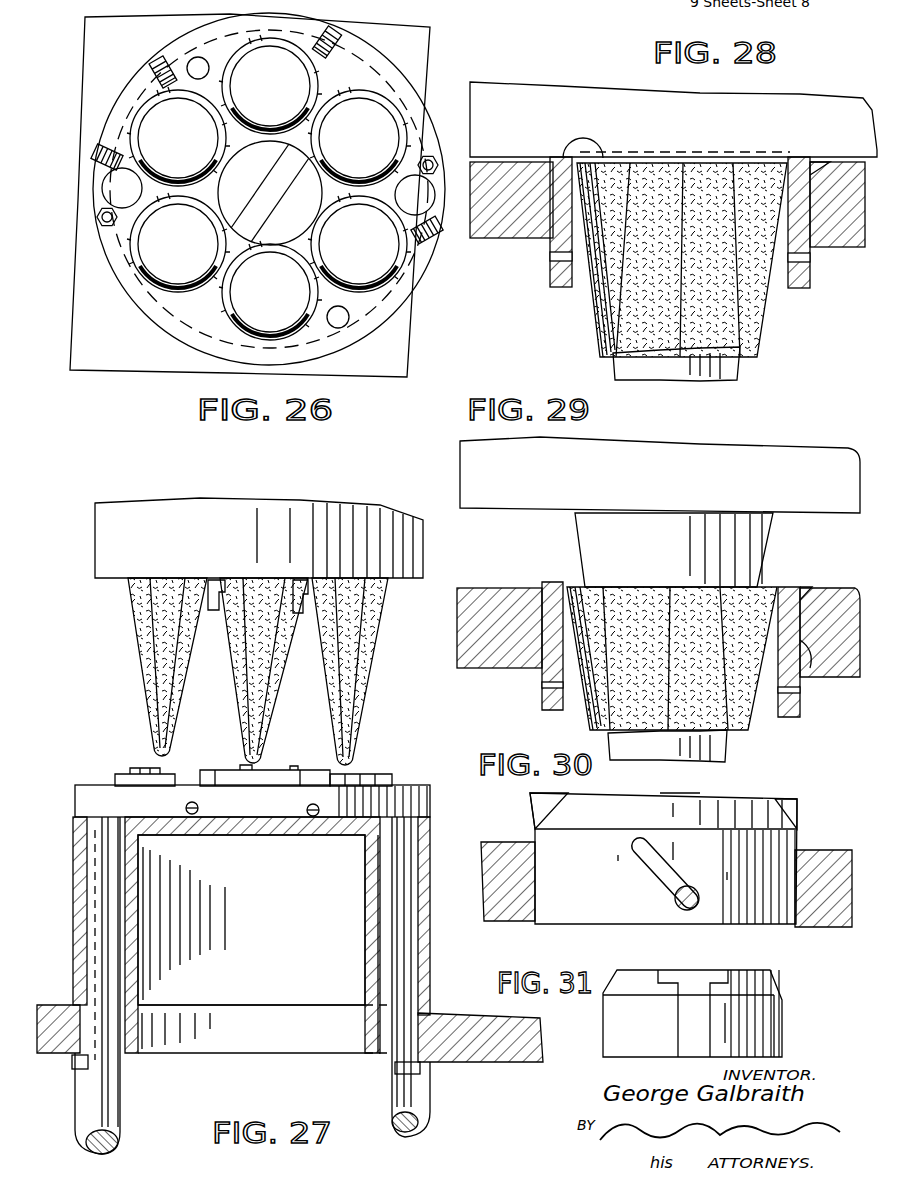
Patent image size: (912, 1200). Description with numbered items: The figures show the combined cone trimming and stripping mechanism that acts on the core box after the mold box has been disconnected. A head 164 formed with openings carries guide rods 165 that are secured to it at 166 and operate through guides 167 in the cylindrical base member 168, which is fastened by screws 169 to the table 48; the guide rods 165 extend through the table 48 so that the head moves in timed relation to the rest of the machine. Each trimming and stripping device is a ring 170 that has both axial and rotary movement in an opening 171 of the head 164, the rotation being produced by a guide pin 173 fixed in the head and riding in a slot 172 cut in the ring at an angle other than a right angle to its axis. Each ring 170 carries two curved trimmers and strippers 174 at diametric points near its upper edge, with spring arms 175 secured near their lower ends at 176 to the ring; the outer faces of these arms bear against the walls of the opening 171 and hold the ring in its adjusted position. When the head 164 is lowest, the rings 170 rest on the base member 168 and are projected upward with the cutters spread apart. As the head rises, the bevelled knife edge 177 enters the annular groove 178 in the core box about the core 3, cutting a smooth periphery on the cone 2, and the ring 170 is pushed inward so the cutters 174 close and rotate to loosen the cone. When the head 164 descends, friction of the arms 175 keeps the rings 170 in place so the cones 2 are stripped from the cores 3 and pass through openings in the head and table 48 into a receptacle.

In FIG. 28, the cone 2 is at (752, 322).
In FIG. 29, the cone 2 is at (600, 712).
In FIG. 27, the cone 2 is at (400, 670).
In FIG. 28, the core 3 is at (722, 380).
In FIG. 29, the core 3 is at (640, 748).
In FIG. 27, the table 48 is at (447, 1023).
In FIG. 26, the head 164 is at (370, 80).
In FIG. 28, the head 164 is at (505, 175).
In FIG. 29, the head 164 is at (470, 660).
In FIG. 30, the head 164 is at (666, 884).
In FIG. 27, the head 164 is at (112, 585).
In FIG. 26, the guide rods 165 is at (120, 190).
In FIG. 27, the guide rods 165 is at (407, 880).
In FIG. 26, the securing points 166 is at (430, 238).
In FIG. 27, the securing points 166 is at (307, 808).
In FIG. 27, the guides 167 is at (142, 944).
In FIG. 27, the cylindrical base member 168 is at (407, 882).
In FIG. 27, the screws 169 is at (75, 1068).
In FIG. 26, the ring 170 is at (238, 108).
In FIG. 28, the ring 170 is at (560, 287).
In FIG. 29, the ring 170 is at (671, 649).
In FIG. 30, the ring 170 is at (765, 922).
In FIG. 31, the ring 170 is at (775, 1025).
In FIG. 28, the opening 171 is at (810, 240).
In FIG. 29, the opening 171 is at (806, 605).
In FIG. 30, the slot 172 is at (665, 860).
In FIG. 30, the guide pin 173 is at (700, 890).
In FIG. 26, the trimmers and strippers 174 is at (228, 60).
In FIG. 28, the trimmers and strippers 174 is at (812, 160).
In FIG. 30, the trimmers and strippers 174 is at (535, 803).
In FIG. 31, the trimmers and strippers 174 is at (697, 977).
In FIG. 27, the trimmers and strippers 174 is at (140, 774).
In FIG. 29, the spring arms 175 is at (815, 660).
In FIG. 28, the securing points 176 is at (550, 256).
In FIG. 29, the securing points 176 is at (800, 690).
In FIG. 28, the knife edge 177 is at (577, 145).
In FIG. 30, the knife edge 177 is at (673, 795).
In FIG. 27, the knife edge 177 is at (350, 773).
In FIG. 27, the annular groove 178 is at (260, 1047).